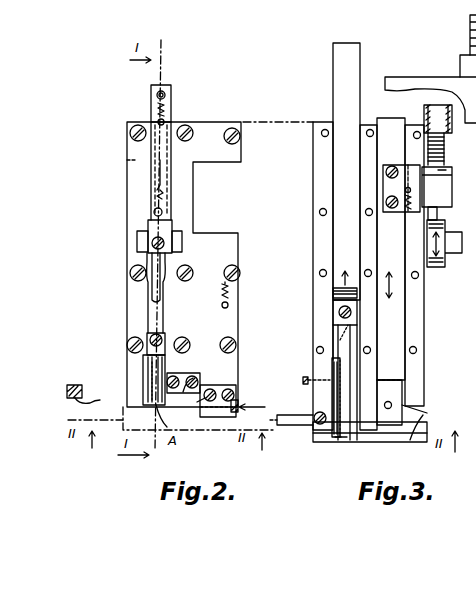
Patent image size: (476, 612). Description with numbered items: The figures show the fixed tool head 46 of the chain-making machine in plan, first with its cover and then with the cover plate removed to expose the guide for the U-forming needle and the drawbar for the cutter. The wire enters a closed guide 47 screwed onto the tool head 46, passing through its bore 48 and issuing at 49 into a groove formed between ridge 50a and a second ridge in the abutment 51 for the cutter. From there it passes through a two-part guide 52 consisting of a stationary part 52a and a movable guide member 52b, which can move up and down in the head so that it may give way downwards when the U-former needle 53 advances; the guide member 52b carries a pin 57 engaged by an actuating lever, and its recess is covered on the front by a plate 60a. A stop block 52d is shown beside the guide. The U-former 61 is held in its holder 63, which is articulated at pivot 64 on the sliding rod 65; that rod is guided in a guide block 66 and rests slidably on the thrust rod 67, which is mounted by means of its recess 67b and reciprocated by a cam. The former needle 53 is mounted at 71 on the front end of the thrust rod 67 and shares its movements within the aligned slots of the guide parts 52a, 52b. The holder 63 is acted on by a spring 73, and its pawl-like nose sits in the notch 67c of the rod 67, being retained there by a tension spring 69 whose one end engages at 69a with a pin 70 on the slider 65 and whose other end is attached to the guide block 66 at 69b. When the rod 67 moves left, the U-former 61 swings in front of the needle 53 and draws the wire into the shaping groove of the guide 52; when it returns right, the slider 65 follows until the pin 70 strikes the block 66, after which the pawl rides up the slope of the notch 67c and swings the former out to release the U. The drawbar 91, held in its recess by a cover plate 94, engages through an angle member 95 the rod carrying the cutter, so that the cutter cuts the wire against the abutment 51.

In FIG. 2, the tool head 46 is at (312, 322).
In FIG. 2, the closed guide 47 is at (218, 418).
In FIG. 2, the bore 48 is at (239, 402).
In FIG. 2, the wire issue point 49 is at (203, 400).
In FIG. 2, the ridge 50a is at (189, 377).
In FIG. 2, the abutment 51 is at (202, 392).
In FIG. 3, the guide 52 is at (330, 412).
In FIG. 2, the stationary part 52a is at (148, 395).
In FIG. 3, the stationary part 52a is at (338, 368).
In FIG. 3, the movable guide member 52b is at (337, 438).
In FIG. 2, the stop block 52d is at (62, 394).
In FIG. 3, the U-former needle 53 is at (337, 336).
In FIG. 3, the pin 57 is at (300, 424).
In FIG. 3, the plate 60a is at (346, 438).
In FIG. 2, the U-former 61 is at (150, 372).
In FIG. 2, the holder 63 is at (148, 278).
In FIG. 2, the pivot 64 is at (137, 240).
In FIG. 2, the sliding rod 65 is at (166, 112).
In FIG. 2, the guide block 66 is at (126, 161).
In FIG. 3, the thrust rod 67 is at (337, 96).
In FIG. 3, the recess 67b is at (332, 340).
In FIG. 3, the notch 67c is at (333, 295).
In FIG. 2, the tension spring 69 is at (156, 110).
In FIG. 2, the spring end attachment 69a is at (157, 93).
In FIG. 2, the spring end attachment 69b is at (138, 210).
In FIG. 2, the pin 70 is at (165, 95).
In FIG. 3, the needle mounting 71 is at (352, 312).
In FIG. 2, the spring 73 is at (150, 300).
In FIG. 3, the drawbar 91 is at (393, 303).
In FIG. 2, the cover plate 94 is at (231, 292).
In FIG. 3, the angle member 95 is at (427, 413).